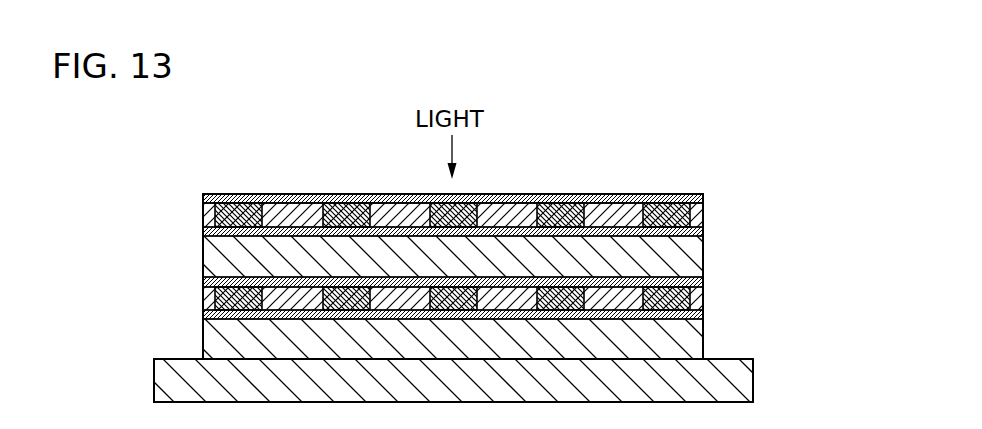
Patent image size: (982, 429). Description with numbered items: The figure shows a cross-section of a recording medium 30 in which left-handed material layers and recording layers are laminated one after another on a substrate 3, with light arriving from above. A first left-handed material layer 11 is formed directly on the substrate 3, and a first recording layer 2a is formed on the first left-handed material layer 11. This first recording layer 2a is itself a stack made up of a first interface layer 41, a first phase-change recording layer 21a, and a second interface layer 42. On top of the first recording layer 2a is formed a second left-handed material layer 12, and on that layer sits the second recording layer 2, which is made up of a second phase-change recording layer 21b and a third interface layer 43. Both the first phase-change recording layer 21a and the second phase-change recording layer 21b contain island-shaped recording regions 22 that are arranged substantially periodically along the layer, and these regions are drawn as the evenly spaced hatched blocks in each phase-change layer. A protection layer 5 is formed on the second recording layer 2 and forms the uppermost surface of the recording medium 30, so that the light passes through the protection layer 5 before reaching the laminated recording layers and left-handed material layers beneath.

The recording medium 30 is at (750, 142).
The substrate 3 is at (743, 378).
The protection layer 5 is at (664, 194).
The upper electrode structure 2 is at (818, 152).
The second phase-change recording layer 21b is at (704, 216).
The third interface layer 43 is at (704, 231).
The second left-handed material layer 12 is at (704, 252).
The first recording layer 2a is at (818, 240).
The second interface layer 42 is at (704, 280).
The first phase-change recording layer 21a is at (704, 298).
The first interface layer 41 is at (704, 315).
The first left-handed material layer 11 is at (704, 333).
The recording regions 22 is at (553, 297).